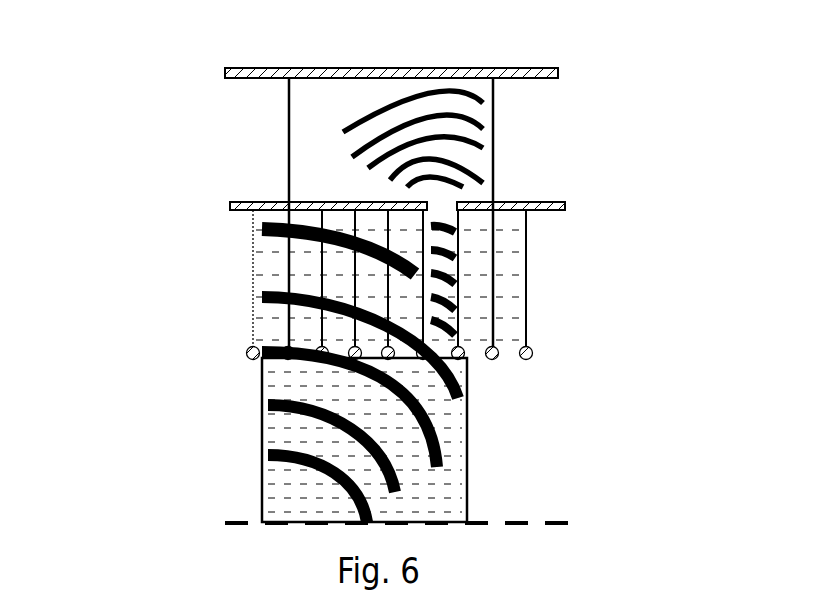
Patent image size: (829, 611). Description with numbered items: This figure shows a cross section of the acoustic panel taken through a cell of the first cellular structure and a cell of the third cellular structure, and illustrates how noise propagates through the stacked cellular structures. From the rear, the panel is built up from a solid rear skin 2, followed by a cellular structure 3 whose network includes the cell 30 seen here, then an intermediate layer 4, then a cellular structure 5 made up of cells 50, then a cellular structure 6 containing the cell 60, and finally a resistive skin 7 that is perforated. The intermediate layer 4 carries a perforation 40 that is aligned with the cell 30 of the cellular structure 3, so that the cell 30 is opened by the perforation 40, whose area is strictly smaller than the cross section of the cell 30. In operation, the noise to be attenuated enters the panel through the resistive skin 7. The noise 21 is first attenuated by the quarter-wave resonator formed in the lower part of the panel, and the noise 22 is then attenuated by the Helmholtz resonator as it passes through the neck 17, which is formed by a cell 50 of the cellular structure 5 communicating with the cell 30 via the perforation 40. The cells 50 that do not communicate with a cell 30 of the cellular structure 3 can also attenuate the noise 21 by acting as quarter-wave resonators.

The solid rear skin 2 is at (537, 66).
The noise 22 is at (450, 93).
The cellular structure 3 is at (243, 122).
The cell 30 is at (308, 147).
The perforation 40 is at (440, 200).
The intermediate layer 4 is at (565, 205).
The cell 50 is at (302, 252).
The cellular structure 5 is at (243, 266).
The neck 17 is at (450, 290).
The noise 21 is at (433, 442).
The cellular structure 6 is at (243, 435).
The cell 60 is at (278, 485).
The resistive skin 7 is at (518, 521).